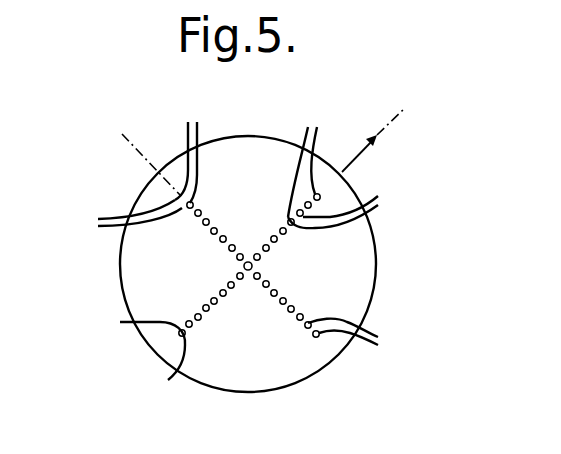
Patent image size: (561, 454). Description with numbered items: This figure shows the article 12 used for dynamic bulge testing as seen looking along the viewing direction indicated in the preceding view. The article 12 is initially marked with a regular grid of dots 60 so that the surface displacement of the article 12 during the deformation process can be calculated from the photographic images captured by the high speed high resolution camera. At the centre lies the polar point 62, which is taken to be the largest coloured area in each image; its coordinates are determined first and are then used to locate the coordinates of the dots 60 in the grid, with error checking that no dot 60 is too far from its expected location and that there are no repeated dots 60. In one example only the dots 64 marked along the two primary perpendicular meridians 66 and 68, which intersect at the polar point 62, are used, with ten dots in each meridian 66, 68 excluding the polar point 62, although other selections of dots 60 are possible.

The article 12 is at (270, 360).
The dots 60 is at (241, 256).
The polar point 62 is at (248, 262).
The dots marked along primary perpendicular meridians 64 is at (275, 252).
The primary perpendicular meridian 66 is at (400, 110).
The primary perpendicular meridian 68 is at (124, 134).